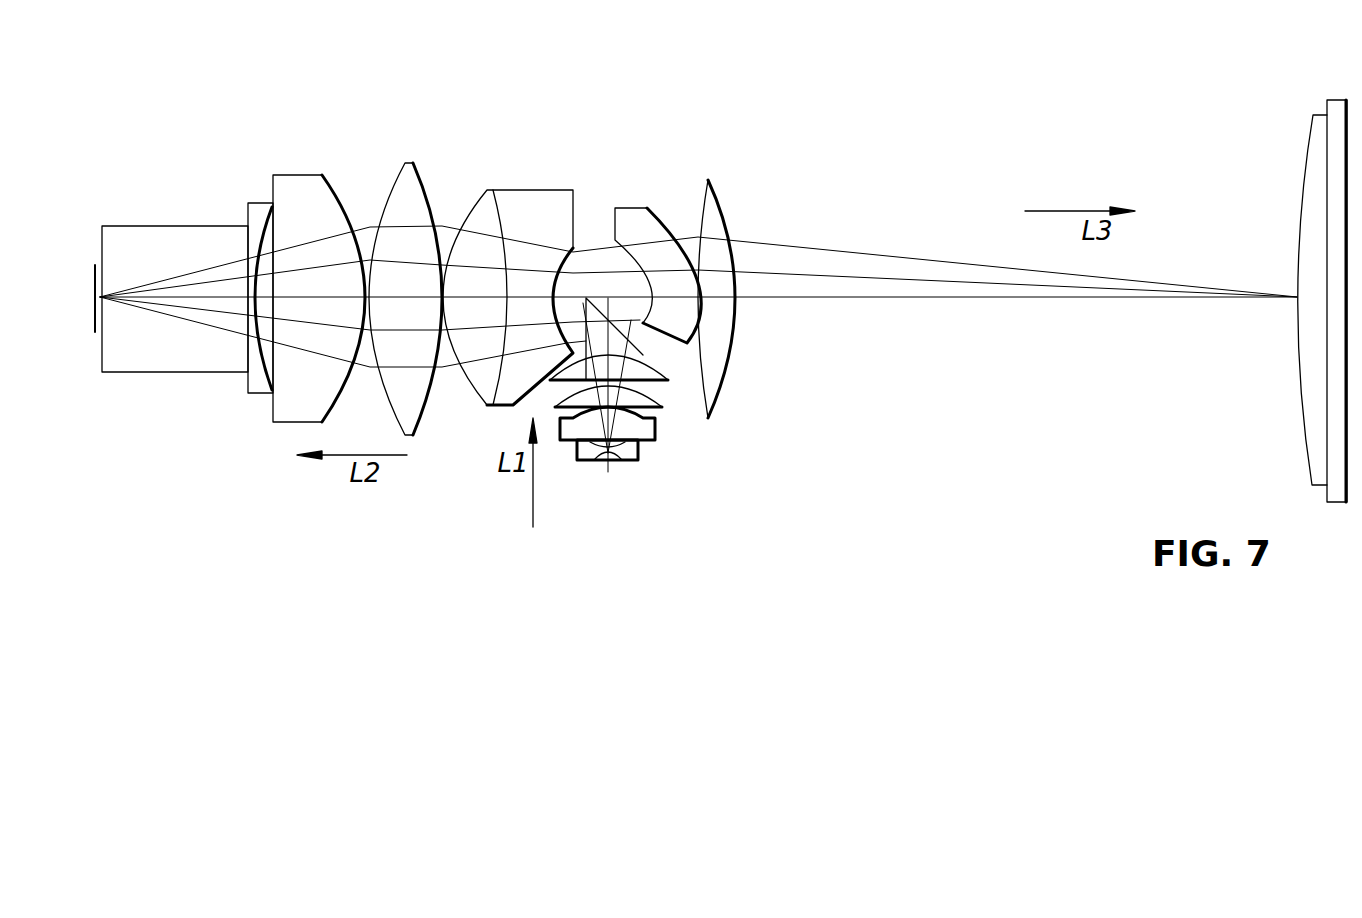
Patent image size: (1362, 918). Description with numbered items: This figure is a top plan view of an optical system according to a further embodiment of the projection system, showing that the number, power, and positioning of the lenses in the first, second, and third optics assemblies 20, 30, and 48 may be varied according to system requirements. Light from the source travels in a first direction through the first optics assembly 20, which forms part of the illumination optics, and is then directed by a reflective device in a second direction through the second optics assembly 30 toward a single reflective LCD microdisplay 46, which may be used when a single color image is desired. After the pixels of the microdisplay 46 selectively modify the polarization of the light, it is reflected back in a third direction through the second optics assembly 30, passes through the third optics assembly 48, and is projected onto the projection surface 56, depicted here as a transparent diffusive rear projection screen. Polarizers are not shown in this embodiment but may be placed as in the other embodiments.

The reflective LCD microdisplay 46 is at (94, 265).
The second optics assembly 30 is at (578, 166).
The first optics assembly 20 is at (679, 368).
The third optics assembly 48 is at (611, 165).
The projection surface 56 is at (1338, 487).